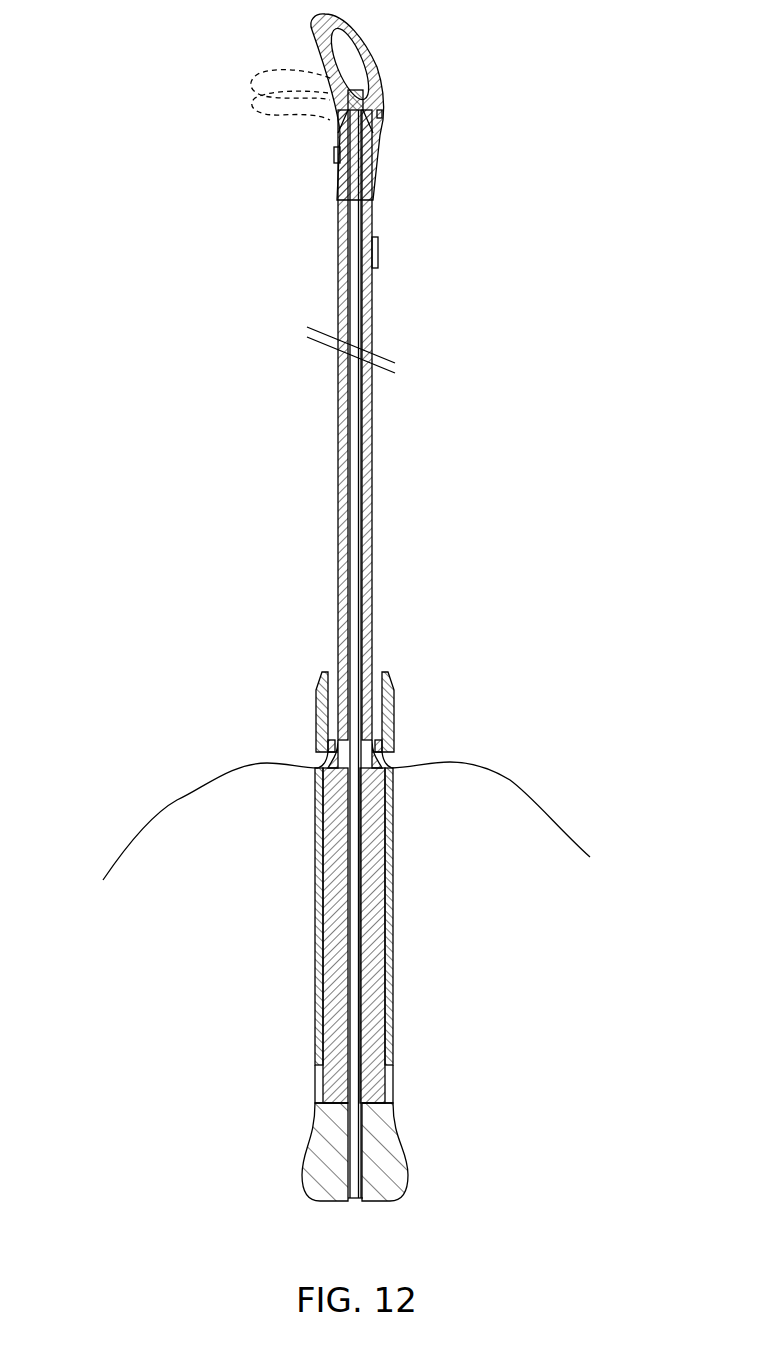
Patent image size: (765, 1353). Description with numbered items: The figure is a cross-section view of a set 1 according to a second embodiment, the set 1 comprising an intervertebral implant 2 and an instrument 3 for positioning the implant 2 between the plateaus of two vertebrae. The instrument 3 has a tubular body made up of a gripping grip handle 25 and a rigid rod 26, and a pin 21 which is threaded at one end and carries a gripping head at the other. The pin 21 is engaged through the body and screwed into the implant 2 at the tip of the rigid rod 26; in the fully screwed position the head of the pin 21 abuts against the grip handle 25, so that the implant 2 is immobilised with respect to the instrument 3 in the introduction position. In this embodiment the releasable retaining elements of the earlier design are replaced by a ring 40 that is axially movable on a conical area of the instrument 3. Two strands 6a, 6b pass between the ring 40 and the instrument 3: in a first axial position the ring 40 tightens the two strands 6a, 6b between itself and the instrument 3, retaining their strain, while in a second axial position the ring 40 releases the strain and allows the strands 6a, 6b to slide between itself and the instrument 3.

The set 1 is at (106, 80).
The intervertebral implant 2 is at (383, 57).
The instrument 3 is at (270, 1004).
The strand 6a is at (510, 780).
The strand 6b is at (182, 797).
The pin 21 is at (353, 553).
The grip handle 25 is at (393, 957).
The rigid rod 26 is at (338, 400).
The ring 40 is at (312, 702).